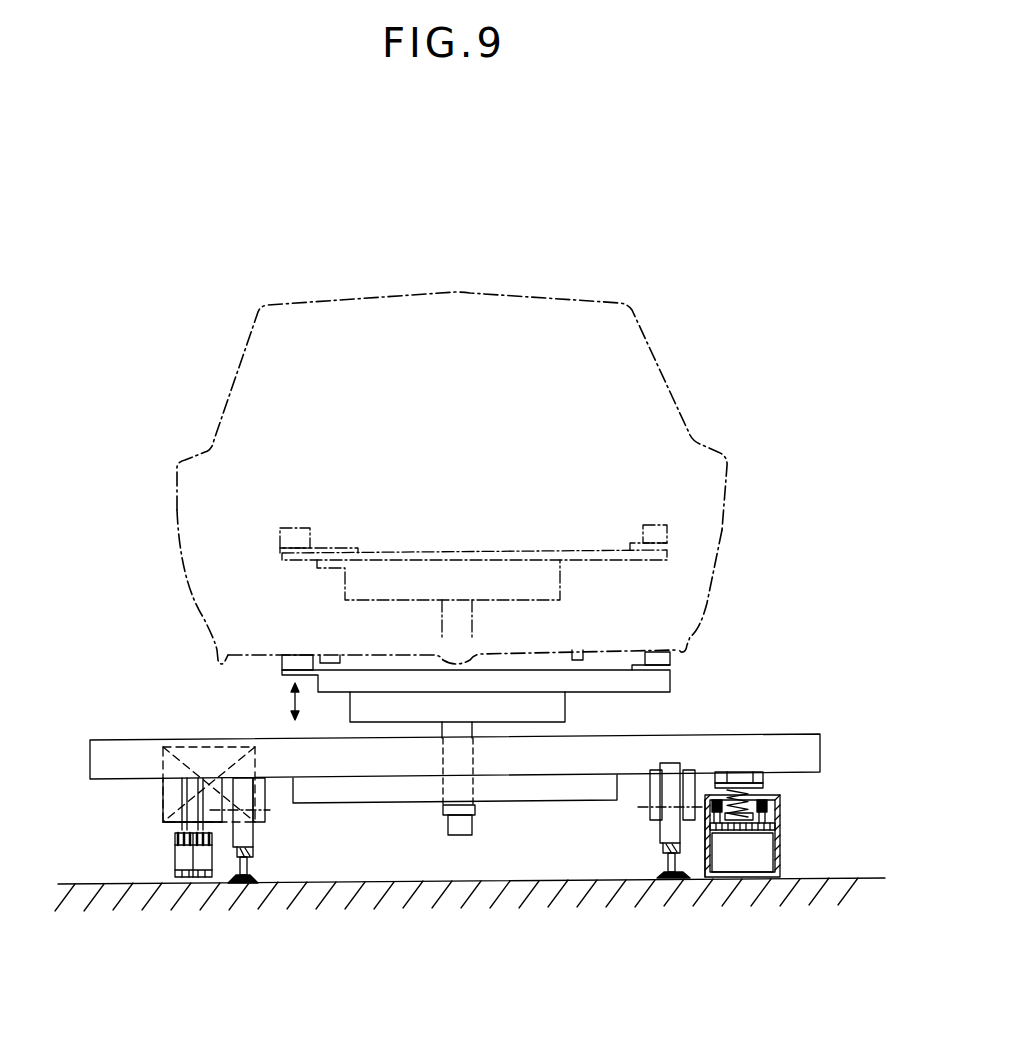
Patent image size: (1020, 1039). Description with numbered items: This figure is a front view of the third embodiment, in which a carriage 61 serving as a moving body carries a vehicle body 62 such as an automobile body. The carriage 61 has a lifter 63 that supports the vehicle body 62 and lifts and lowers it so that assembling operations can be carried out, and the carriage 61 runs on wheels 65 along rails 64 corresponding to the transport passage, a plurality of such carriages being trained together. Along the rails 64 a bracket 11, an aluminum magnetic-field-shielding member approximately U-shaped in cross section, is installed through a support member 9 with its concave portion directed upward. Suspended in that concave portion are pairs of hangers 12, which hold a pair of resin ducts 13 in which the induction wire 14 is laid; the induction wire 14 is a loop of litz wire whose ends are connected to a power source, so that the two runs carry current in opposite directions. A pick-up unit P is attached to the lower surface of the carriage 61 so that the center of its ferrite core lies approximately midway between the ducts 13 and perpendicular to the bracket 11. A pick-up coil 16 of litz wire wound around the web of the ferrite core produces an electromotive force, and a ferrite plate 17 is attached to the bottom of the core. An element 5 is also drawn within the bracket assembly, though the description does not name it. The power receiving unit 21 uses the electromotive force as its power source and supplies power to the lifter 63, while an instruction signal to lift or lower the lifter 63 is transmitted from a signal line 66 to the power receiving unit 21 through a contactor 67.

The vehicle body 62 is at (657, 358).
The lifter 63 is at (560, 590).
The carriage 61 is at (815, 733).
The power receiving unit 21 is at (165, 792).
The contactor 67 is at (163, 822).
The signal line 66 is at (173, 860).
The wheels 65 is at (257, 830).
The rails 64 is at (240, 883).
The pick-up unit P is at (740, 777).
The ferrite plate 17 is at (767, 785).
The support member 9 is at (782, 860).
The inner block 5 is at (747, 833).
The pick-up coil 16 is at (733, 830).
The ducts 13 is at (778, 803).
The induction wire 14 is at (782, 812).
The hangers 12 is at (780, 830).
The bracket 11 is at (702, 813).